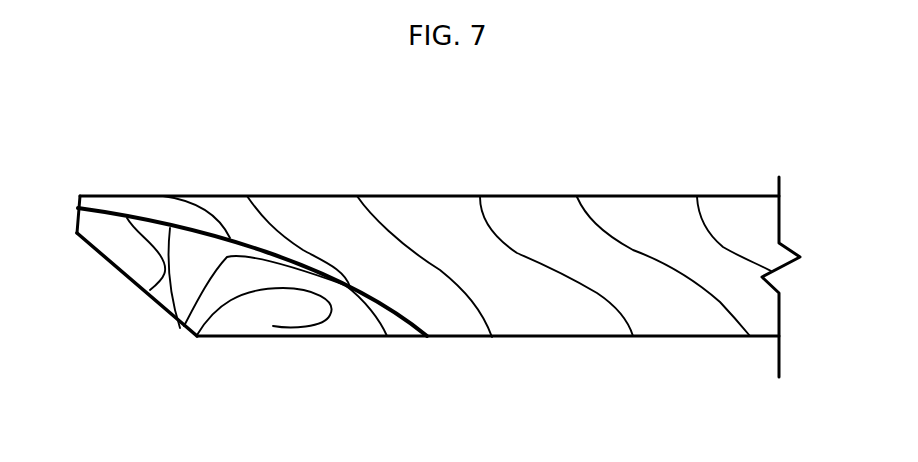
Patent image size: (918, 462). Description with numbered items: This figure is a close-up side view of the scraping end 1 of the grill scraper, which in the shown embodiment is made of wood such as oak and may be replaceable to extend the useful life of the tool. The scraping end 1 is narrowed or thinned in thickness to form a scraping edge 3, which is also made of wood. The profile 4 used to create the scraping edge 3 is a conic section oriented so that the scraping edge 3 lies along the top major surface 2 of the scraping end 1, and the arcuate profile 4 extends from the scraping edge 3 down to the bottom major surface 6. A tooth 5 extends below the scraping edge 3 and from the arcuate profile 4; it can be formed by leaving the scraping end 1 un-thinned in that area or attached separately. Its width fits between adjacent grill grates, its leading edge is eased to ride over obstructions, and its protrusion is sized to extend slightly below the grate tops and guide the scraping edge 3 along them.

The scraping end 1 is at (553, 270).
The top major surface 2 is at (332, 196).
The scraping edge 3 is at (78, 207).
The profile 4 is at (150, 290).
The tooth 5 is at (220, 283).
The bottom major surface 6 is at (407, 337).